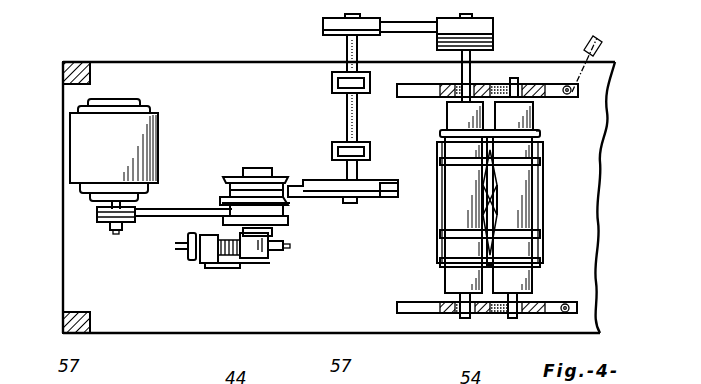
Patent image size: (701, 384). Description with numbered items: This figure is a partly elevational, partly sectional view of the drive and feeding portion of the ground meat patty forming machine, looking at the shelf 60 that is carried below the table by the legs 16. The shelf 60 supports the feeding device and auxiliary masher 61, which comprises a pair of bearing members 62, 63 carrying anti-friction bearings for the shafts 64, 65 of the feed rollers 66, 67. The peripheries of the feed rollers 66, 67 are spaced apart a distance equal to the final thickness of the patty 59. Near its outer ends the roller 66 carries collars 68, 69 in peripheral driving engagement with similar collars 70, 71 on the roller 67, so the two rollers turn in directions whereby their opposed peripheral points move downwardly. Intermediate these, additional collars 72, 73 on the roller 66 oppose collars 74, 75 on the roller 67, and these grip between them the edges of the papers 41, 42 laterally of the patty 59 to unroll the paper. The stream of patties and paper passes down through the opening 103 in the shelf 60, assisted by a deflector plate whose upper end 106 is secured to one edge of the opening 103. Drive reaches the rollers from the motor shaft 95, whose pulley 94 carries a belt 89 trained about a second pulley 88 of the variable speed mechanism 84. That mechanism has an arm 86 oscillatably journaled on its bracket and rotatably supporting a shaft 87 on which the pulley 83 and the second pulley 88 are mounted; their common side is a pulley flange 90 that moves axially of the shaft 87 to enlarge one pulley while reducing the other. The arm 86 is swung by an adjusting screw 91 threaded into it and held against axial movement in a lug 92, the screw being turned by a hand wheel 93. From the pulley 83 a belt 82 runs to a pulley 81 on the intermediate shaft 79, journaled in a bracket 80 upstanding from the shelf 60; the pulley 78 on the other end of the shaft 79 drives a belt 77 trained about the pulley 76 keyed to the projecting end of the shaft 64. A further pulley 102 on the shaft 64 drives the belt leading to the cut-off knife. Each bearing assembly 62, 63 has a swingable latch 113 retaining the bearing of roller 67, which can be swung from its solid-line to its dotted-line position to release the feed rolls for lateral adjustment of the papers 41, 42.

The legs 16 is at (74, 68).
The shelf 60 is at (203, 76).
The pulley 94 is at (127, 222).
The motor shaft 95 is at (116, 230).
The belt 89 is at (169, 216).
The pulley flange 90 is at (228, 205).
The pulley 83 is at (244, 172).
The belt 82 is at (288, 191).
The second pulley 88 is at (285, 222).
The upper end of deflector plate 106 is at (435, 186).
The pulley 81 is at (337, 199).
The bracket 80 is at (360, 110).
The intermediate shaft 79 is at (357, 50).
The belt 77 is at (400, 30).
The pulley 78 is at (358, 21).
The pulley 76 is at (488, 19).
The pulley 102 is at (495, 44).
The bearing member 62 is at (480, 88).
The swingable latch 113 is at (569, 88).
The feed roller 66 is at (455, 116).
The feed roller 67 is at (530, 115).
The collar 68 is at (446, 134).
The collar 70 is at (540, 134).
The opening 103 is at (543, 175).
The collar 72 is at (441, 162).
The collar 74 is at (540, 161).
The collar 73 is at (441, 234).
The collar 75 is at (540, 234).
The collar 69 is at (441, 263).
The collar 71 is at (540, 262).
The patty 59 is at (491, 194).
The paper 41 is at (483, 200).
The paper 42 is at (496, 208).
The feeding device and auxiliary masher 61 is at (403, 270).
The bearing member 63 is at (490, 315).
The shaft 64 is at (461, 318).
The shaft 65 is at (518, 318).
The variable speed mechanism 84 is at (230, 269).
The hand wheel 93 is at (188, 250).
The lug 92 is at (204, 263).
The adjusting screw 91 is at (215, 265).
The arm 86 is at (242, 259).
The shaft 87 is at (256, 259).